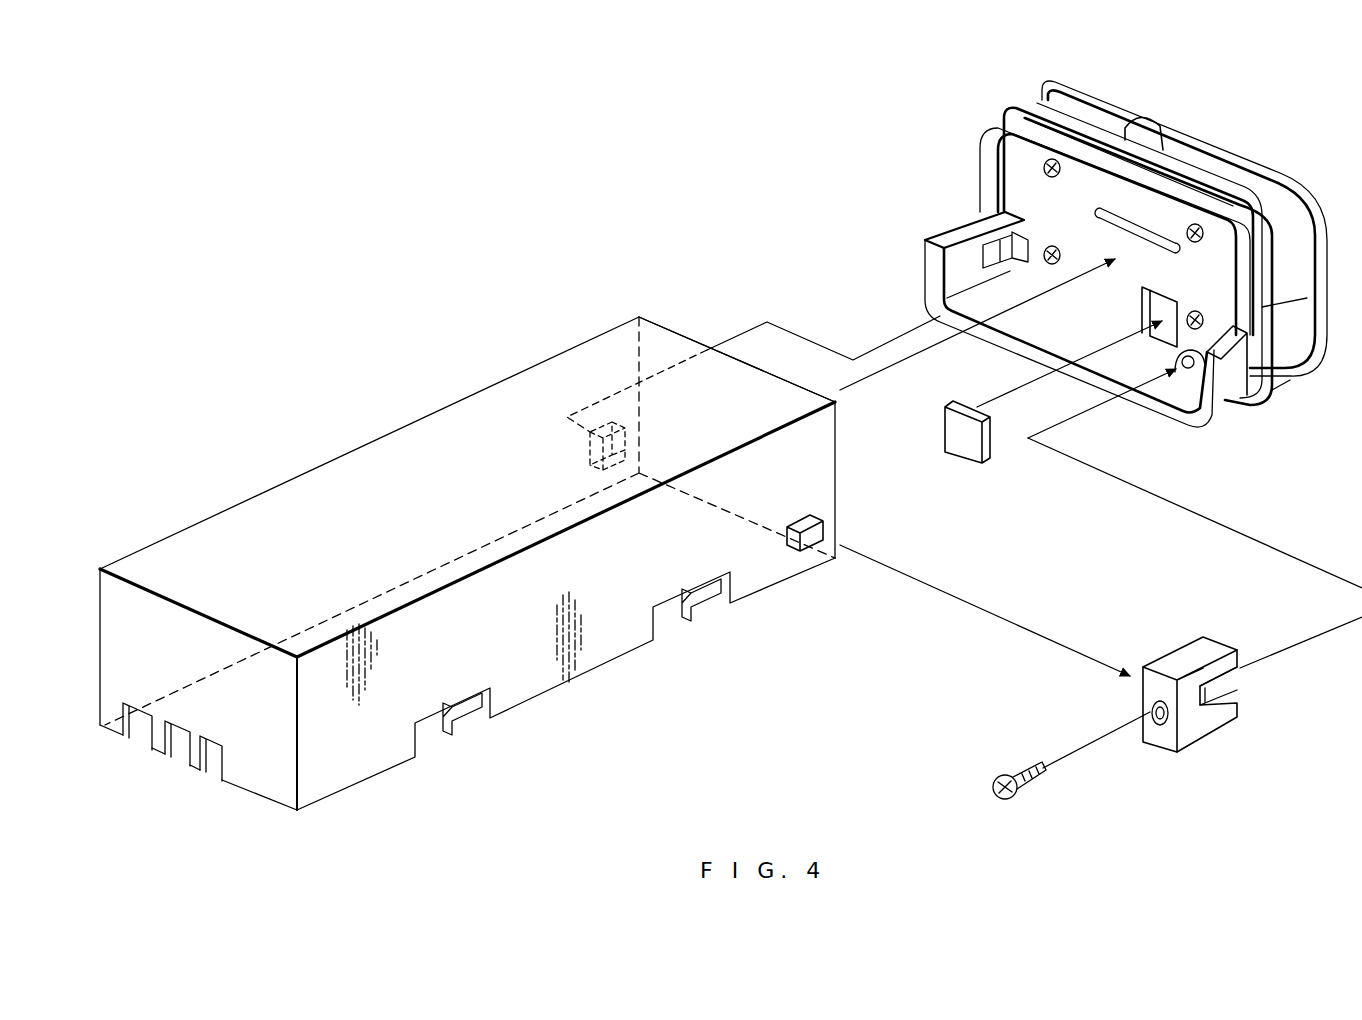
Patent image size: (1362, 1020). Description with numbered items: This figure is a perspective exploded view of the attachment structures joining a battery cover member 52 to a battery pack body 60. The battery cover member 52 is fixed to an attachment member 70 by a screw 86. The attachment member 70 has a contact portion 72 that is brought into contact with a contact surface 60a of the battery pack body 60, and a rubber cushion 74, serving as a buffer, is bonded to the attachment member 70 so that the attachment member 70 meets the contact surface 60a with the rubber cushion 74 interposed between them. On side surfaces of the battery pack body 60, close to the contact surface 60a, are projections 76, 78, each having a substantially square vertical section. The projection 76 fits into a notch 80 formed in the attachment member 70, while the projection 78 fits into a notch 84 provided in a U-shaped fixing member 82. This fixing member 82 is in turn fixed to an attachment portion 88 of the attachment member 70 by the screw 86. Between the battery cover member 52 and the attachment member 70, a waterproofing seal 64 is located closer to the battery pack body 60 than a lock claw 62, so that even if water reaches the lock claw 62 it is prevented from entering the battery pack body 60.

The battery cover member 52 is at (1288, 218).
The battery pack body 60 is at (362, 500).
The contact surface 60a is at (674, 322).
The lock claw 62 is at (1143, 128).
The waterproofing seal 64 is at (1018, 110).
The attachment member 70 is at (1183, 418).
The contact portion 72 is at (1160, 238).
The rubber cushion 74 is at (976, 458).
The projection 76 is at (588, 446).
The projection 78 is at (810, 553).
The notch 80 is at (985, 243).
The U-shaped fixing member 82 is at (1192, 730).
The notch 84 is at (1212, 692).
The screw 86 is at (1003, 800).
The attachment portion 88 is at (1194, 370).